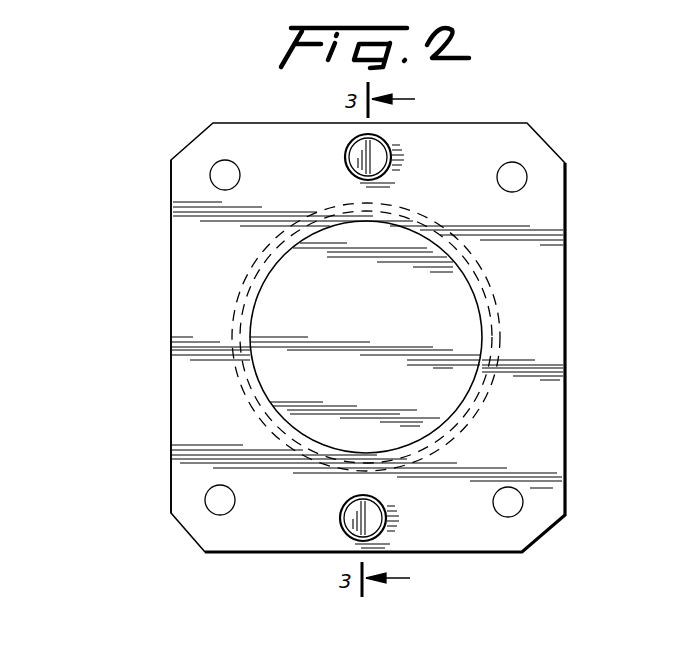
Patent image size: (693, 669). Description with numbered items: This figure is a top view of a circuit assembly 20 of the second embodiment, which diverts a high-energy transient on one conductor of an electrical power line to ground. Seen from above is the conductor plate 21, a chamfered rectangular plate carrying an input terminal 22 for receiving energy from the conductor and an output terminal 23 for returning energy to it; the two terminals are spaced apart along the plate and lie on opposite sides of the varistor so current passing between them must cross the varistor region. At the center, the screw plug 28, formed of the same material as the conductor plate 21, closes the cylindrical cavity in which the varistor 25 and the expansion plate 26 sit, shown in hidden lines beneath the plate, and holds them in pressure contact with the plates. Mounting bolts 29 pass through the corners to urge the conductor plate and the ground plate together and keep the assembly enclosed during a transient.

The circuit assembly 20 is at (578, 390).
The conductor plate 21 is at (170, 262).
The input terminal 22 is at (394, 139).
The output terminal 23 is at (340, 522).
The varistor 25 is at (254, 413).
The expansion plate 26 is at (245, 377).
The screw plug 28 is at (468, 318).
The mounting bolts 29 is at (527, 163).